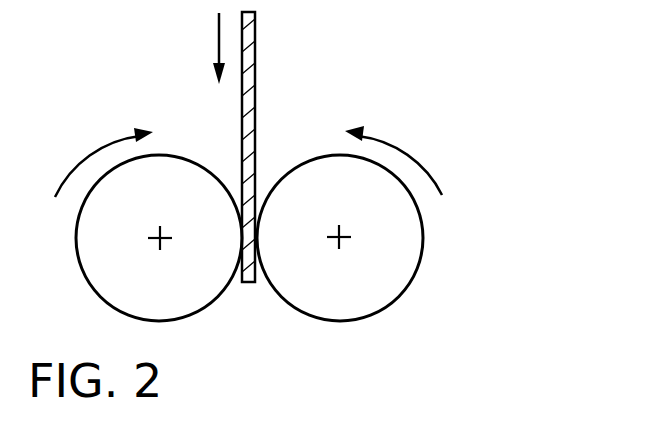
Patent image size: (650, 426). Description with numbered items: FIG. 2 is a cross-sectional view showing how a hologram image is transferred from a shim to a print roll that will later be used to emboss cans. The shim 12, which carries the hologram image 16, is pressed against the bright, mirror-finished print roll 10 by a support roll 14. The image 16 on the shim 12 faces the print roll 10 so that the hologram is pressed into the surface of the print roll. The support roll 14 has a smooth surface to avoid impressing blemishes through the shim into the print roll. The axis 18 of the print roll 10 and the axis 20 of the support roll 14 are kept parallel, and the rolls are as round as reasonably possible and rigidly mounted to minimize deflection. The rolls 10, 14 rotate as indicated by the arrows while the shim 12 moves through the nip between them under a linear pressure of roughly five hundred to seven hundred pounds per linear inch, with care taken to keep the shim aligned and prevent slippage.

The print roll 10 is at (438, 262).
The shim 12 is at (270, 65).
The support roll 14 is at (213, 323).
The image 16 is at (256, 118).
The axis 18 is at (347, 243).
The axis 20 is at (152, 243).